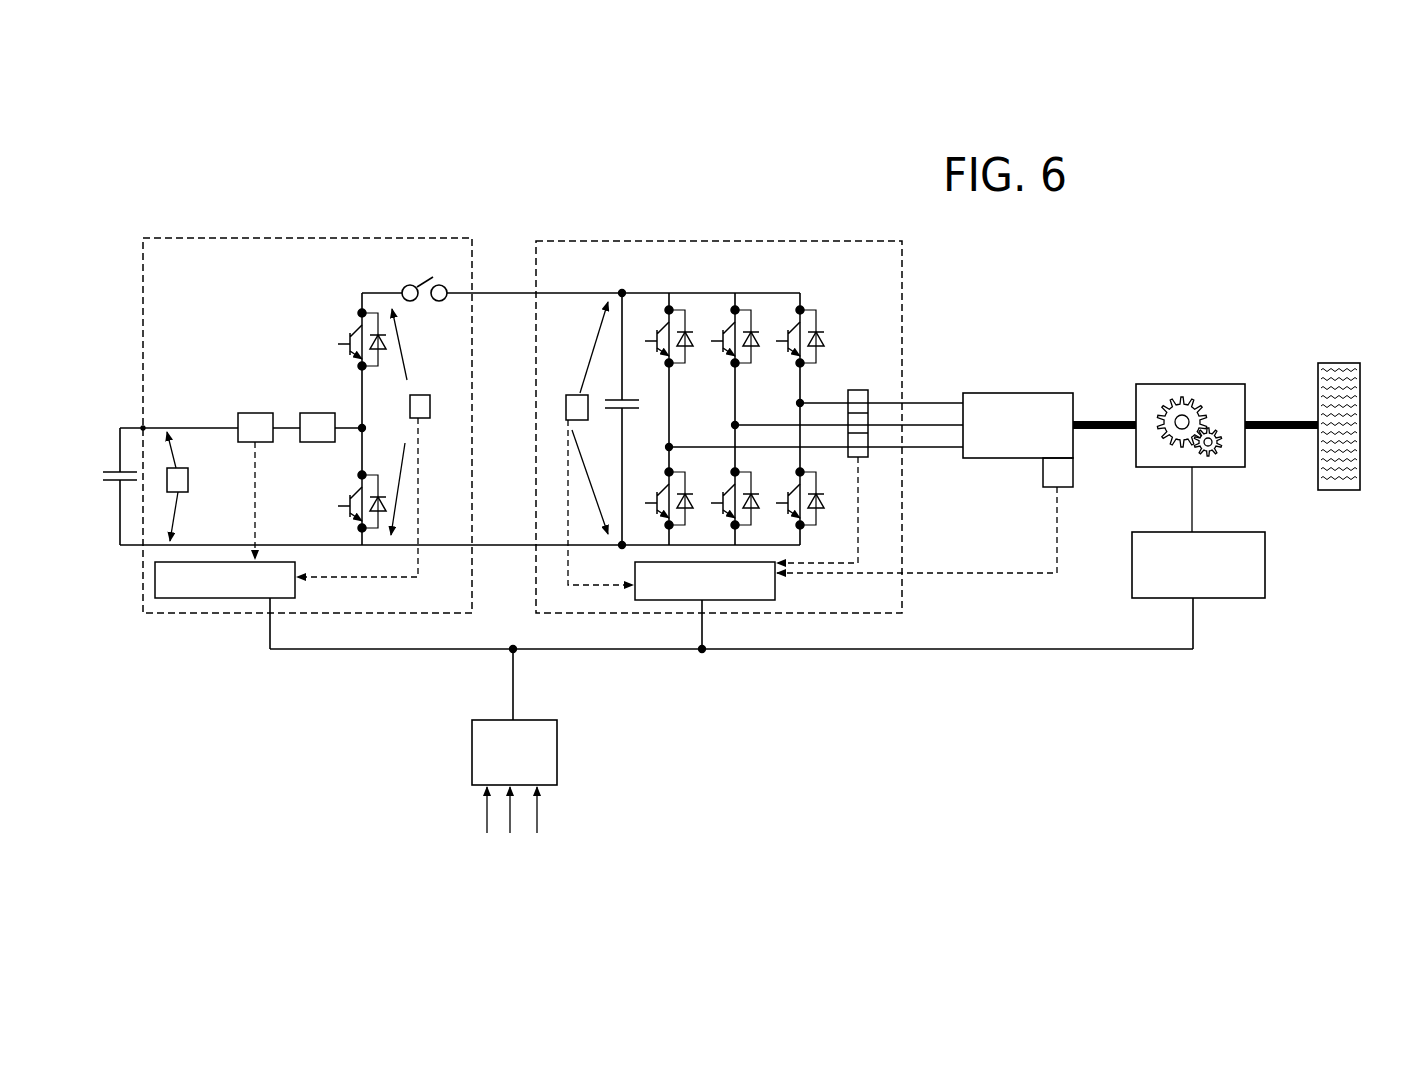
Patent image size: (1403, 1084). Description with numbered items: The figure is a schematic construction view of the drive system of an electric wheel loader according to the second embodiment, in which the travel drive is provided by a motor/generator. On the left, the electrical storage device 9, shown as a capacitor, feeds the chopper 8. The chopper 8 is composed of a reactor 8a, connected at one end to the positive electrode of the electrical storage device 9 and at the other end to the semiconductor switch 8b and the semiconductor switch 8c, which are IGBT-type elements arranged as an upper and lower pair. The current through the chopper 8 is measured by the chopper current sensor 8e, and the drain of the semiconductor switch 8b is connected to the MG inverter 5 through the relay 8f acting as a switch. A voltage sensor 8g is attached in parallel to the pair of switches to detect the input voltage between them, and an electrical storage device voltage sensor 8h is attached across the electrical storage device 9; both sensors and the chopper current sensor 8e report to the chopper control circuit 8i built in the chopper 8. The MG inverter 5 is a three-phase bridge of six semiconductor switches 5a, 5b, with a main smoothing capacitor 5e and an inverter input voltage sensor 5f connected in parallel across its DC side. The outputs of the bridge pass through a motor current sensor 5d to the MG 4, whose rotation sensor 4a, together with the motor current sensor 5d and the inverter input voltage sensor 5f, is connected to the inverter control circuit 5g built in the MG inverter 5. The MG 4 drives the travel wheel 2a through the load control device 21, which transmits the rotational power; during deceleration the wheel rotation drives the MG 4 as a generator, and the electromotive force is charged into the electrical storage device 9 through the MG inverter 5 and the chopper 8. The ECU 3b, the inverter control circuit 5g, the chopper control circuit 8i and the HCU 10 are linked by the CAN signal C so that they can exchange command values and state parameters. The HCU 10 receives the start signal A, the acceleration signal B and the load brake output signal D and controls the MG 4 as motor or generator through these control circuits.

The chopper 8 is at (253, 236).
The reactor 8a is at (316, 409).
The semiconductor switch 8b is at (353, 333).
The semiconductor switch 8c is at (357, 493).
The chopper current sensor 8e is at (255, 407).
The relay 8f is at (427, 265).
The voltage sensor 8g is at (427, 391).
The electrical storage device voltage sensor 8h is at (190, 478).
The chopper control circuit 8i is at (290, 592).
The electrical storage device 9 is at (109, 418).
The MG inverter 5 is at (758, 240).
The semiconductor switch 5a is at (658, 327).
The semiconductor switch 5b is at (667, 490).
The motor current sensor 5d is at (858, 388).
The main smoothing capacitor 5e is at (623, 400).
The inverter input voltage sensor 5f is at (565, 387).
The inverter control circuit 5g is at (777, 592).
The MG 4 is at (1028, 393).
The rotation sensor 4a is at (1072, 490).
The load control device 21 is at (1203, 388).
The travel wheel 2a is at (1333, 365).
The ECU 3b is at (1247, 602).
The HCU 10 is at (557, 745).
The CAN signal C is at (963, 645).
The start signal A is at (480, 822).
The acceleration signal B is at (506, 835).
The load brake output signal D is at (533, 832).